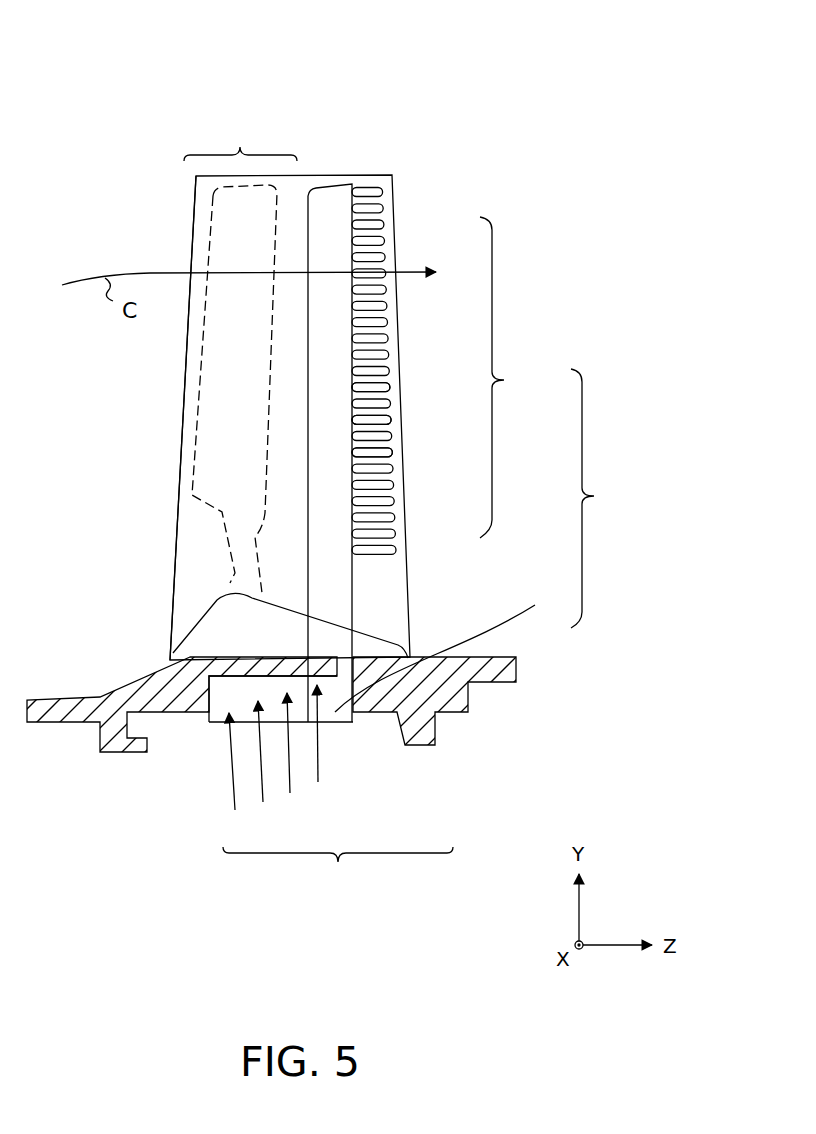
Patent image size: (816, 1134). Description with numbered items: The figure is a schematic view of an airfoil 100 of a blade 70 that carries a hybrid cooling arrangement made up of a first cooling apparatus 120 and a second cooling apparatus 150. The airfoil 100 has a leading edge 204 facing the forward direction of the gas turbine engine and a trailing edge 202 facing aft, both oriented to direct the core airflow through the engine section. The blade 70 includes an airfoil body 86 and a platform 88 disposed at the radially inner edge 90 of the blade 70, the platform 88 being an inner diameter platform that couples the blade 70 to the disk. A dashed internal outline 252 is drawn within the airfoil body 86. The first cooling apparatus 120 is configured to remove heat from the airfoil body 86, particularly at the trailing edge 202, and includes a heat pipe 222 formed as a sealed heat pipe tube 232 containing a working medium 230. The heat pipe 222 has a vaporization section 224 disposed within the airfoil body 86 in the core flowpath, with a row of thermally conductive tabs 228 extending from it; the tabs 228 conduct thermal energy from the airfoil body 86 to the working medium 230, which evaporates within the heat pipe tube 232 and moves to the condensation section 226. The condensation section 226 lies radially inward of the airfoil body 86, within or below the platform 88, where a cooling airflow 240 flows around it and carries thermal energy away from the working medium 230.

The airfoil 100 is at (58, 22).
The blade 70 is at (90, 93).
The second cooling apparatus 150 is at (240, 136).
The airfoil body 86 is at (300, 443).
The leading edge 204 is at (186, 341).
The internal cooling cavity 252 is at (208, 428).
The trailing edge 202 is at (397, 307).
The vaporization section 224 is at (454, 371).
The tabs 228 is at (387, 386).
The working medium 230 is at (335, 418).
The heat pipe tube 232 is at (383, 460).
The heat pipe 222 is at (609, 498).
The condensation section 226 is at (371, 641).
The platform 88 is at (140, 695).
The radially inner edge 90 is at (285, 654).
The cooling airflow 240 is at (232, 795).
The first cooling apparatus 120 is at (338, 873).